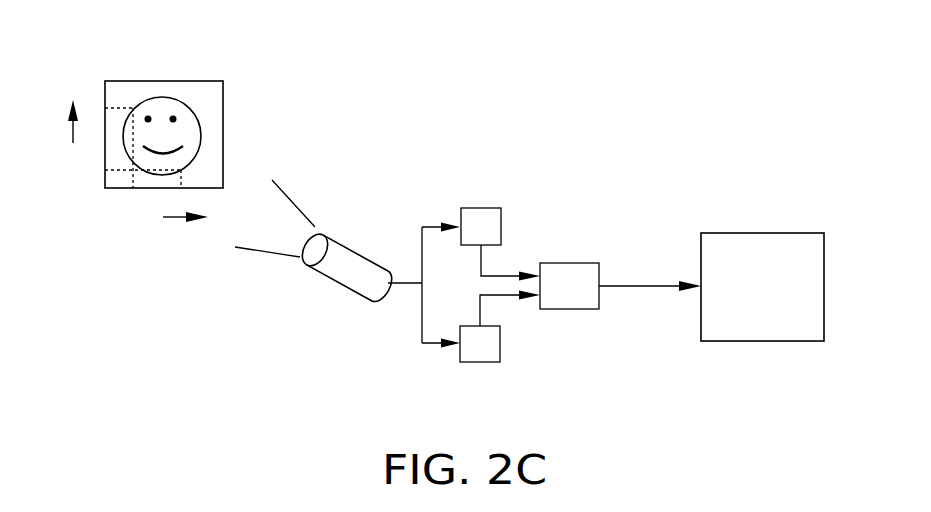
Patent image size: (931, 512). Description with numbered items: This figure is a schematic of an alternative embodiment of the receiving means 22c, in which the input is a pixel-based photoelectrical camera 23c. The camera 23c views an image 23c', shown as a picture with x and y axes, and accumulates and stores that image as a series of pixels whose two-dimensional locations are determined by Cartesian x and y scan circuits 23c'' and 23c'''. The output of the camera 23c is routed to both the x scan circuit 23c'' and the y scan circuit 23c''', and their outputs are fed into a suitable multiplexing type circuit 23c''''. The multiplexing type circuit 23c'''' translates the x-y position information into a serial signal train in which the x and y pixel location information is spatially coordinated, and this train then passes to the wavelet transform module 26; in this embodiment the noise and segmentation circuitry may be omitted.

The image 23c' is at (182, 134).
The pixel-based photoelectrical camera 23c is at (316, 253).
The receiving means 22c is at (612, 172).
The Cartesian x scan circuit 23c'' is at (434, 208).
The Cartesian y scan circuit 23c''' is at (522, 368).
The multiplexing type circuit 23c'''' is at (601, 311).
The wavelet transform module 26 is at (731, 232).